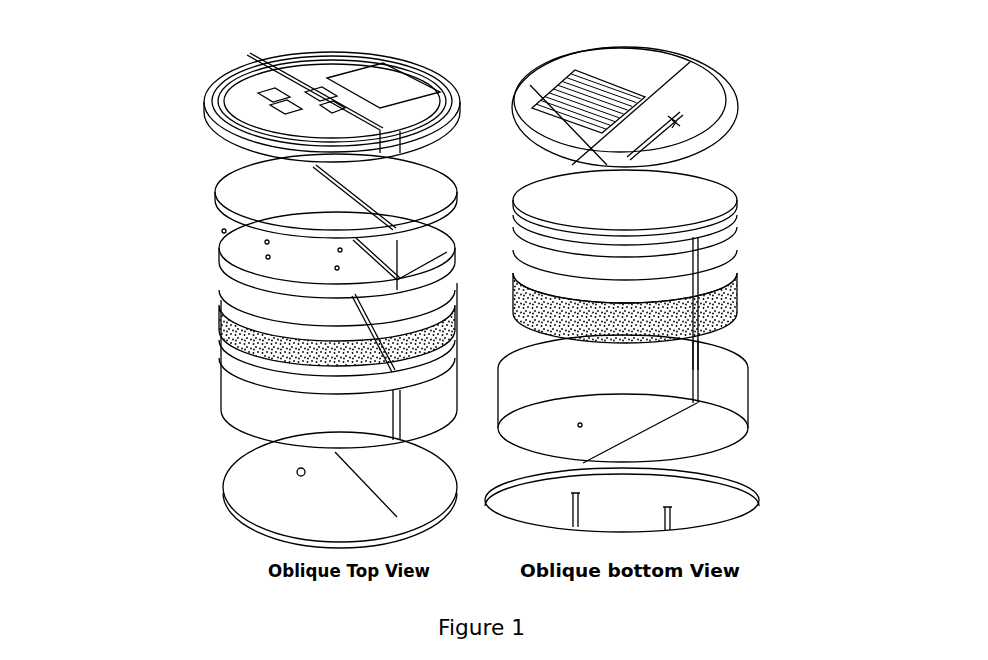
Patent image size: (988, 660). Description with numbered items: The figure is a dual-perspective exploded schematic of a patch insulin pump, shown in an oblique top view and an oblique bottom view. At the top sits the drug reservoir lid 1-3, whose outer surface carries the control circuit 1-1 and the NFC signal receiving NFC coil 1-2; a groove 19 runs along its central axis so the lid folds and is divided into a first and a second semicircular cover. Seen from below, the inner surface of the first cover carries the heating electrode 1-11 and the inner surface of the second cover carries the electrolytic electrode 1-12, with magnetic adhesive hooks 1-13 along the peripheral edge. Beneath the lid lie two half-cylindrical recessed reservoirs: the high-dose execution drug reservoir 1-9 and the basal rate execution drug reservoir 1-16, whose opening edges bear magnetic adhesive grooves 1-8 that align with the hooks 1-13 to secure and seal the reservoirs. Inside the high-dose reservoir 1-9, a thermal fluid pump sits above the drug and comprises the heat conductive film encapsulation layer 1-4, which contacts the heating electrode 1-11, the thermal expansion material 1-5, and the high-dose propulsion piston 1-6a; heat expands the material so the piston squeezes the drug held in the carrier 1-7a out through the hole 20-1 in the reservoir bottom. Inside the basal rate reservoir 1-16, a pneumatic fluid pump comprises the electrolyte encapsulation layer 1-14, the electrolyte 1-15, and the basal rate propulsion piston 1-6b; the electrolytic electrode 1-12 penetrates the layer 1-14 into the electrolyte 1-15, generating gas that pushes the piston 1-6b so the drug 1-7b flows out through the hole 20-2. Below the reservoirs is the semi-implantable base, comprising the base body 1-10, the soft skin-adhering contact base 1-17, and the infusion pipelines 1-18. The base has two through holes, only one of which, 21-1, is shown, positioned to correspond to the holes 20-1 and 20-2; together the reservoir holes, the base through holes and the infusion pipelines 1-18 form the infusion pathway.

The control circuit 1-1 is at (287, 83).
The NFC coil 1-2 is at (225, 108).
The drug reservoir lid 1-3 is at (230, 135).
The heat conductive film encapsulation layer 1-4 is at (253, 207).
The thermal expansion material 1-5 is at (250, 246).
The high-dose propulsion piston 1-6a is at (233, 263).
The drug carrier 1-7a is at (233, 327).
The magnetic adhesive groove 1-8 is at (273, 380).
The high-dose execution drug reservoir 1-9 is at (233, 388).
The base body 1-10 is at (270, 478).
The groove 19 is at (400, 131).
The through hole 21-1 is at (297, 476).
The heating electrode 1-11 is at (598, 95).
The electrolytic electrode 1-12 is at (680, 112).
The magnetic adhesive hooks 1-13 is at (570, 165).
The electrolyte encapsulation layer 1-14 is at (705, 205).
The electrolyte 1-15 is at (705, 250).
The basal rate propulsion piston 1-6b is at (712, 285).
The drug 1-7b is at (715, 322).
The basal rate execution drug reservoir 1-16 is at (710, 373).
The hole 20-1 is at (580, 425).
The hole 20-2 is at (663, 443).
The contact base 1-17 is at (710, 493).
The infusion pipeline 1-18 is at (575, 520).